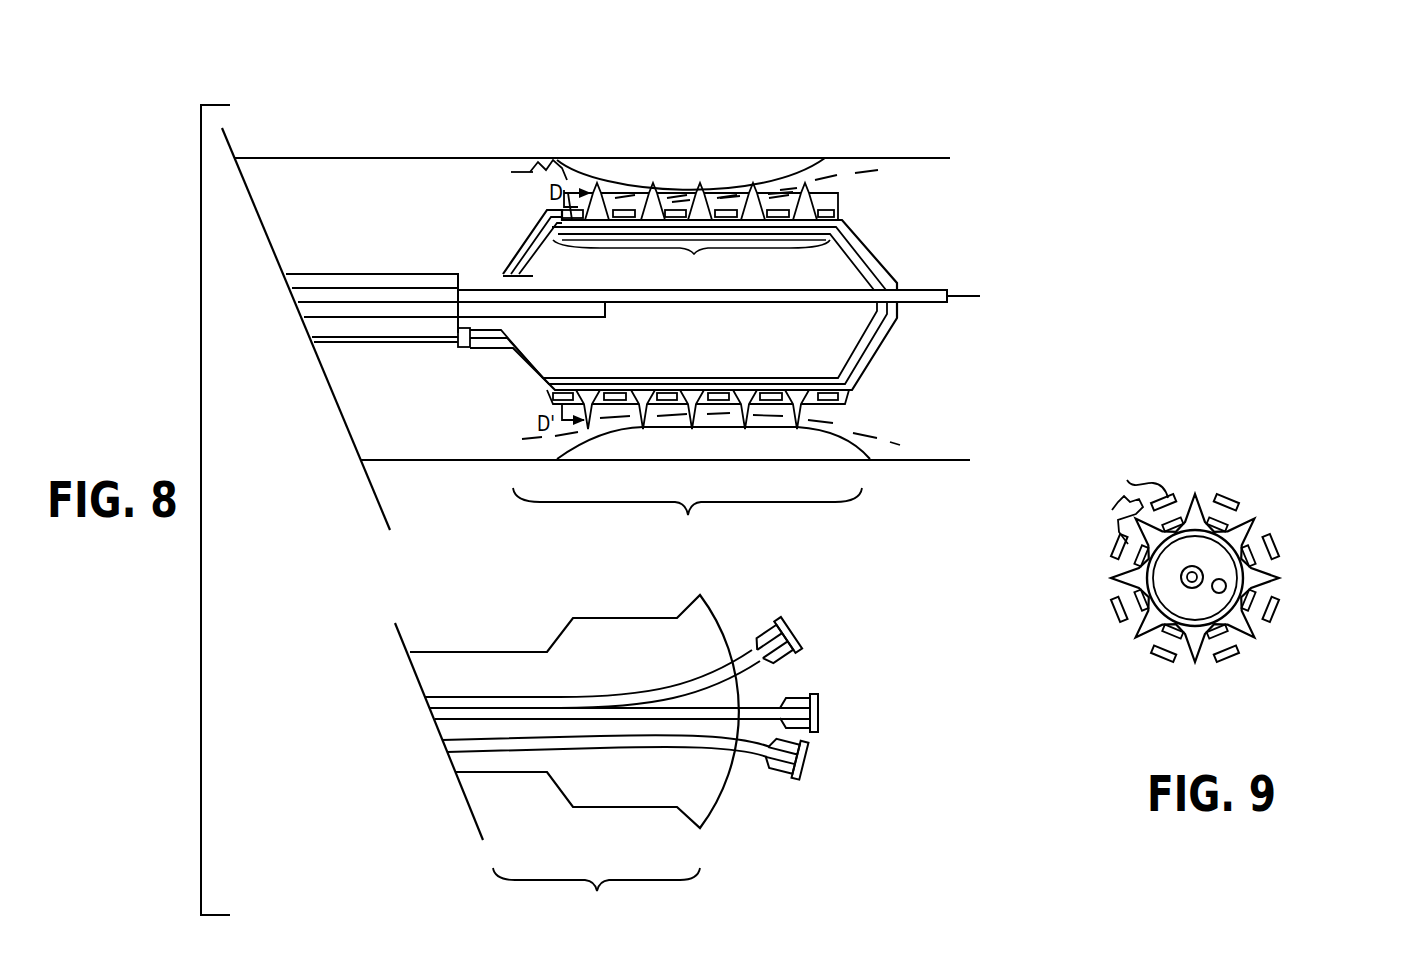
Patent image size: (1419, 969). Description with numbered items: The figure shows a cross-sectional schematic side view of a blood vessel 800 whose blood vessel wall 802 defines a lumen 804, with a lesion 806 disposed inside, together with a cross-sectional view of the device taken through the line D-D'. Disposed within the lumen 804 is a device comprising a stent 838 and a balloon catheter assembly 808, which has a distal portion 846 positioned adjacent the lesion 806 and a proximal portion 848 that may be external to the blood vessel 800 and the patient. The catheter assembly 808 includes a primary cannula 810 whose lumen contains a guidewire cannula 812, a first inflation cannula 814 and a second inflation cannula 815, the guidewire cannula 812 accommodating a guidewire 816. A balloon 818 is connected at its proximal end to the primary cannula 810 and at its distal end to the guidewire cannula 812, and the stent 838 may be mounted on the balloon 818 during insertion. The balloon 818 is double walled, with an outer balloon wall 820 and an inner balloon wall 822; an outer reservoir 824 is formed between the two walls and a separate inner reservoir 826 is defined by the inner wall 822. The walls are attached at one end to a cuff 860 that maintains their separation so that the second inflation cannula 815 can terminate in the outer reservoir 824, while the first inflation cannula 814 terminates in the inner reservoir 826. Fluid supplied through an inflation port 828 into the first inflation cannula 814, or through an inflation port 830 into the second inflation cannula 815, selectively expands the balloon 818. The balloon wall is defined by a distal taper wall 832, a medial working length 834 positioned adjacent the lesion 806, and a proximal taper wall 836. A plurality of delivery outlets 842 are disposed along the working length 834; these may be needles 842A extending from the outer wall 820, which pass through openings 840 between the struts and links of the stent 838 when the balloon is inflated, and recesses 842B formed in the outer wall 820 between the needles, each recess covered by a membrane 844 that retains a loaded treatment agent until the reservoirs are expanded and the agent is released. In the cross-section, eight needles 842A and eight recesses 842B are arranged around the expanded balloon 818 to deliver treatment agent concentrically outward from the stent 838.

In FIG. 8, the blood vessel 800 is at (874, 120).
In FIG. 8, the blood vessel wall 802 is at (927, 158).
In FIG. 8, the lumen 804 is at (995, 219).
In FIG. 8, the lesion 806 is at (703, 176).
In FIG. 8, the balloon catheter assembly 808 is at (500, 398).
In FIG. 9, the balloon catheter assembly 808 is at (1238, 468).
In FIG. 8, the primary cannula 810 is at (437, 276).
In FIG. 8, the guidewire cannula 812 is at (323, 296).
In FIG. 9, the guidewire cannula 812 is at (1185, 578).
In FIG. 8, the first inflation cannula 814 is at (386, 302).
In FIG. 9, the first inflation cannula 814 is at (1226, 588).
In FIG. 8, the second inflation cannula 815 is at (425, 344).
In FIG. 8, the guidewire 816 is at (974, 295).
In FIG. 9, the guidewire 816 is at (1193, 598).
In FIG. 8, the balloon 818 is at (838, 340).
In FIG. 8, the outer balloon wall 820 is at (843, 217).
In FIG. 9, the outer balloon wall 820 is at (1244, 553).
In FIG. 8, the inner balloon wall 822 is at (838, 228).
In FIG. 9, the inner balloon wall 822 is at (1184, 627).
In FIG. 8, the outer reservoir 824 is at (858, 253).
In FIG. 9, the outer reservoir 824 is at (1243, 617).
In FIG. 8, the inner reservoir 826 is at (844, 282).
In FIG. 9, the inner reservoir 826 is at (1208, 612).
In FIG. 8, the inflation port 828 is at (820, 712).
In FIG. 8, the inflation port 830 is at (812, 757).
In FIG. 8, the distal taper wall 832 is at (850, 284).
In FIG. 8, the medial working length 834 is at (691, 258).
In FIG. 8, the proximal taper wall 836 is at (558, 247).
In FIG. 8, the stent 838 is at (521, 170).
In FIG. 9, the stent 838 is at (1127, 480).
In FIG. 8, the openings 840 is at (550, 164).
In FIG. 9, the openings 840 is at (1108, 515).
In FIG. 8, the delivery outlets 842 is at (850, 415).
In FIG. 8, the needles 842A is at (808, 196).
In FIG. 9, the needles 842A is at (1260, 515).
In FIG. 8, the recesses 842B is at (550, 222).
In FIG. 9, the recesses 842B is at (1222, 517).
In FIG. 8, the membrane 844 is at (568, 208).
In FIG. 9, the membrane 844 is at (1222, 522).
In FIG. 8, the distal portion 846 is at (687, 516).
In FIG. 8, the proximal portion 848 is at (574, 757).
In FIG. 8, the cuff 860 is at (466, 348).